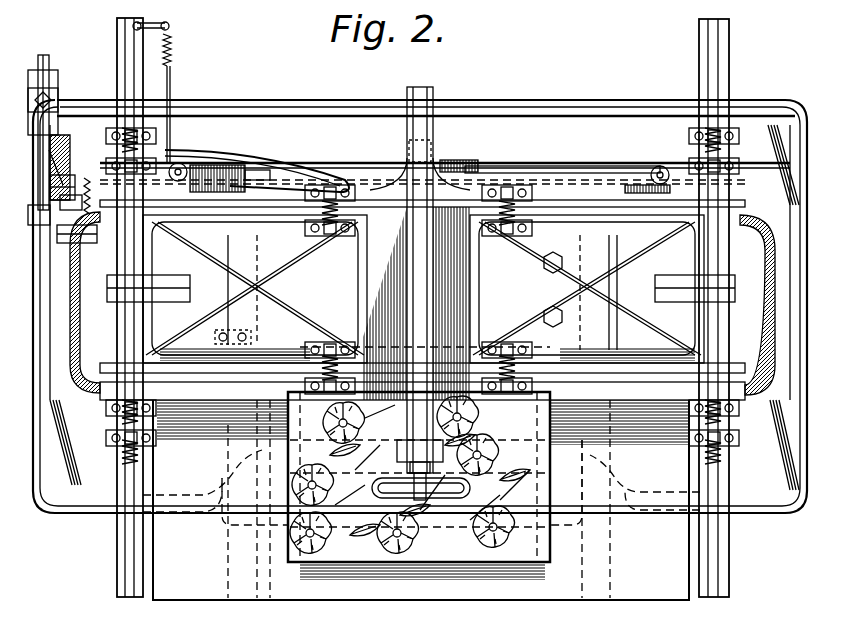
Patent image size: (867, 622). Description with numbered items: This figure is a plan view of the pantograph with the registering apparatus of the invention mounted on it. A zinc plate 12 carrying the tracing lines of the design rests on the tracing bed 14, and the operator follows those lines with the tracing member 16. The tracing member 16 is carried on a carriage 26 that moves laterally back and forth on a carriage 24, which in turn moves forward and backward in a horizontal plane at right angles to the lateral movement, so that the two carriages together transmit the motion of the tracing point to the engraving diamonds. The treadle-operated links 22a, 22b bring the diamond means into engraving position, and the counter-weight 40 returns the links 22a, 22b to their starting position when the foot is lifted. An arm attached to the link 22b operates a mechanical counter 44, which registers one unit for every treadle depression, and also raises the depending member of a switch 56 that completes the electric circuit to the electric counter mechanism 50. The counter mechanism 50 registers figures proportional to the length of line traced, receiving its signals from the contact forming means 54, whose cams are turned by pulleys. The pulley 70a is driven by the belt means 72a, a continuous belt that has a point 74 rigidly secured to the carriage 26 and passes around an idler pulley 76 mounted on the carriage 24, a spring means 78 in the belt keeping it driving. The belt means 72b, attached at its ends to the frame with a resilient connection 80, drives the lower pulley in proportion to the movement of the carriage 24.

The zinc plate 12 is at (378, 553).
The tracing bed 14 is at (243, 592).
The tracing member 16 is at (420, 495).
The link means 22a is at (55, 250).
The link means 22b is at (60, 175).
The carriage 24 is at (138, 398).
The carriage 26 is at (455, 225).
The counter-weight 40 is at (52, 72).
The mechanical counter 44 is at (70, 192).
The counter mechanism 50 is at (80, 237).
The contact forming means 54 is at (230, 163).
The switch 56 is at (62, 176).
The pulley 70a is at (185, 164).
The belt means 72a is at (565, 166).
The belt means 72b is at (170, 88).
The point of belt 74 is at (405, 160).
The idler pulley 76 is at (661, 167).
The spring means 78 is at (452, 161).
The resilient connection 80 is at (175, 46).